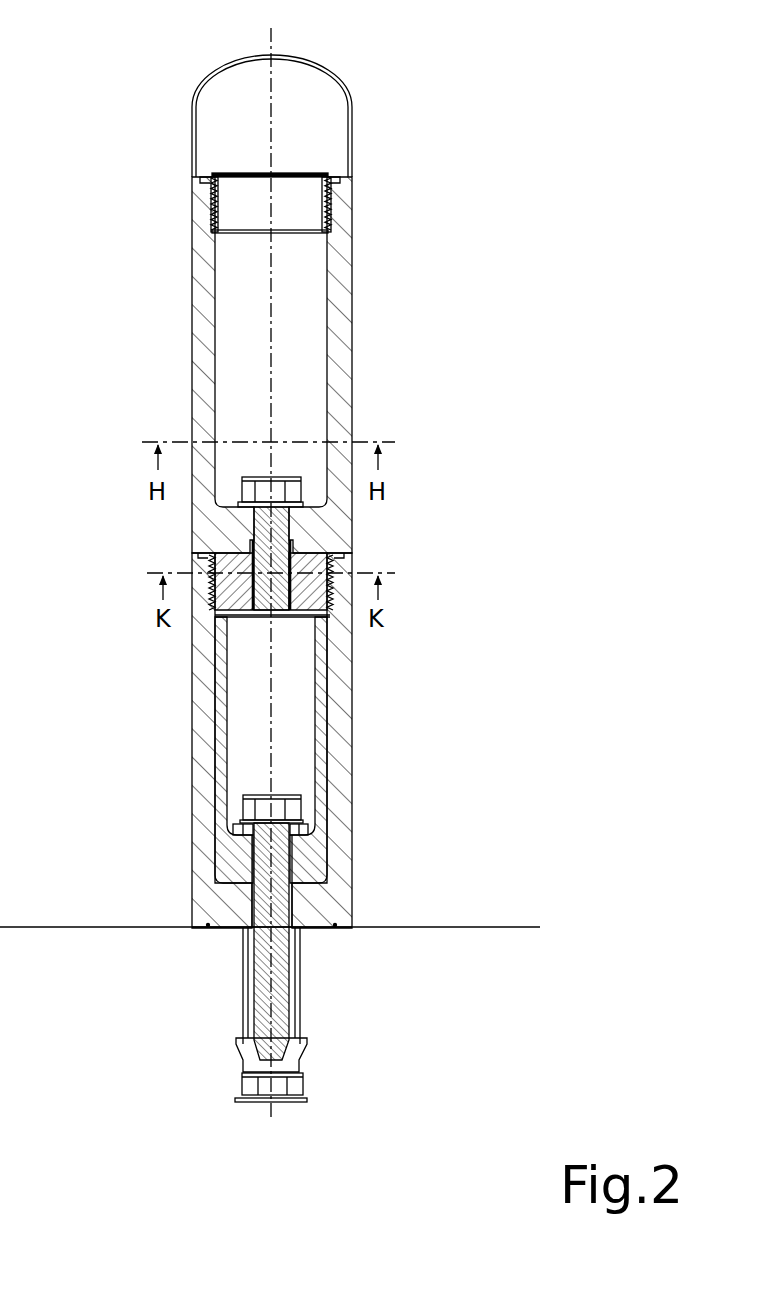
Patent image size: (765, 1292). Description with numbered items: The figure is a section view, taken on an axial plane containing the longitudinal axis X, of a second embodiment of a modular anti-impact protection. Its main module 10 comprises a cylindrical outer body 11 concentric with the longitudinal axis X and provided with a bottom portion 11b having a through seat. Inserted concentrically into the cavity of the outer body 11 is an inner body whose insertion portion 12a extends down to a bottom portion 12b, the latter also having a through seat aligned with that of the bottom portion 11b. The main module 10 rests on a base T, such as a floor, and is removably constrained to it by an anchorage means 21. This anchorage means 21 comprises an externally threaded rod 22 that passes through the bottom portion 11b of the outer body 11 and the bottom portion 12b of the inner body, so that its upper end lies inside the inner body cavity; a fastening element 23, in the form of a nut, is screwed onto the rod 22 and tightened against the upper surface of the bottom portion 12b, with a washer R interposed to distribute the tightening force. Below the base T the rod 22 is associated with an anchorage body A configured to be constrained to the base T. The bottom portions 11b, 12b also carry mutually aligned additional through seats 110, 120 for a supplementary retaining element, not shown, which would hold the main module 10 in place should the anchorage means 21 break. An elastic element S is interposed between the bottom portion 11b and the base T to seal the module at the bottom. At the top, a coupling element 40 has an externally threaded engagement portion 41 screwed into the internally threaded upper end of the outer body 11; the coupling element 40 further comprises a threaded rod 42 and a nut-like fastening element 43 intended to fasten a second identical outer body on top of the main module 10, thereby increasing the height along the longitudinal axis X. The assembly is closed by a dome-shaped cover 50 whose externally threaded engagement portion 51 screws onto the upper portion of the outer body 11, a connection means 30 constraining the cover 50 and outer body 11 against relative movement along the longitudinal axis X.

The main module 10 is at (362, 691).
The outer body 11 is at (198, 219).
The bottom portion 11b is at (321, 905).
The through seat 110 is at (336, 932).
The insertion portion 12a is at (205, 750).
The bottom portion 12b is at (196, 859).
The through seat 120 is at (378, 865).
The anchorage means 21 is at (359, 916).
The rod 22 is at (335, 893).
The fastening element 23 is at (330, 773).
The connection means 30 is at (246, 197).
The coupling element 40 is at (256, 566).
The engagement portion 41 is at (353, 575).
The rod 42 is at (315, 509).
The fastening element 43 is at (229, 455).
The cover 50 is at (252, 110).
The engagement portion 51 is at (338, 204).
The anchorage body A is at (283, 1087).
The washer R is at (332, 809).
The elastic element S is at (255, 937).
The base T is at (270, 889).
The longitudinal axis X is at (259, 560).